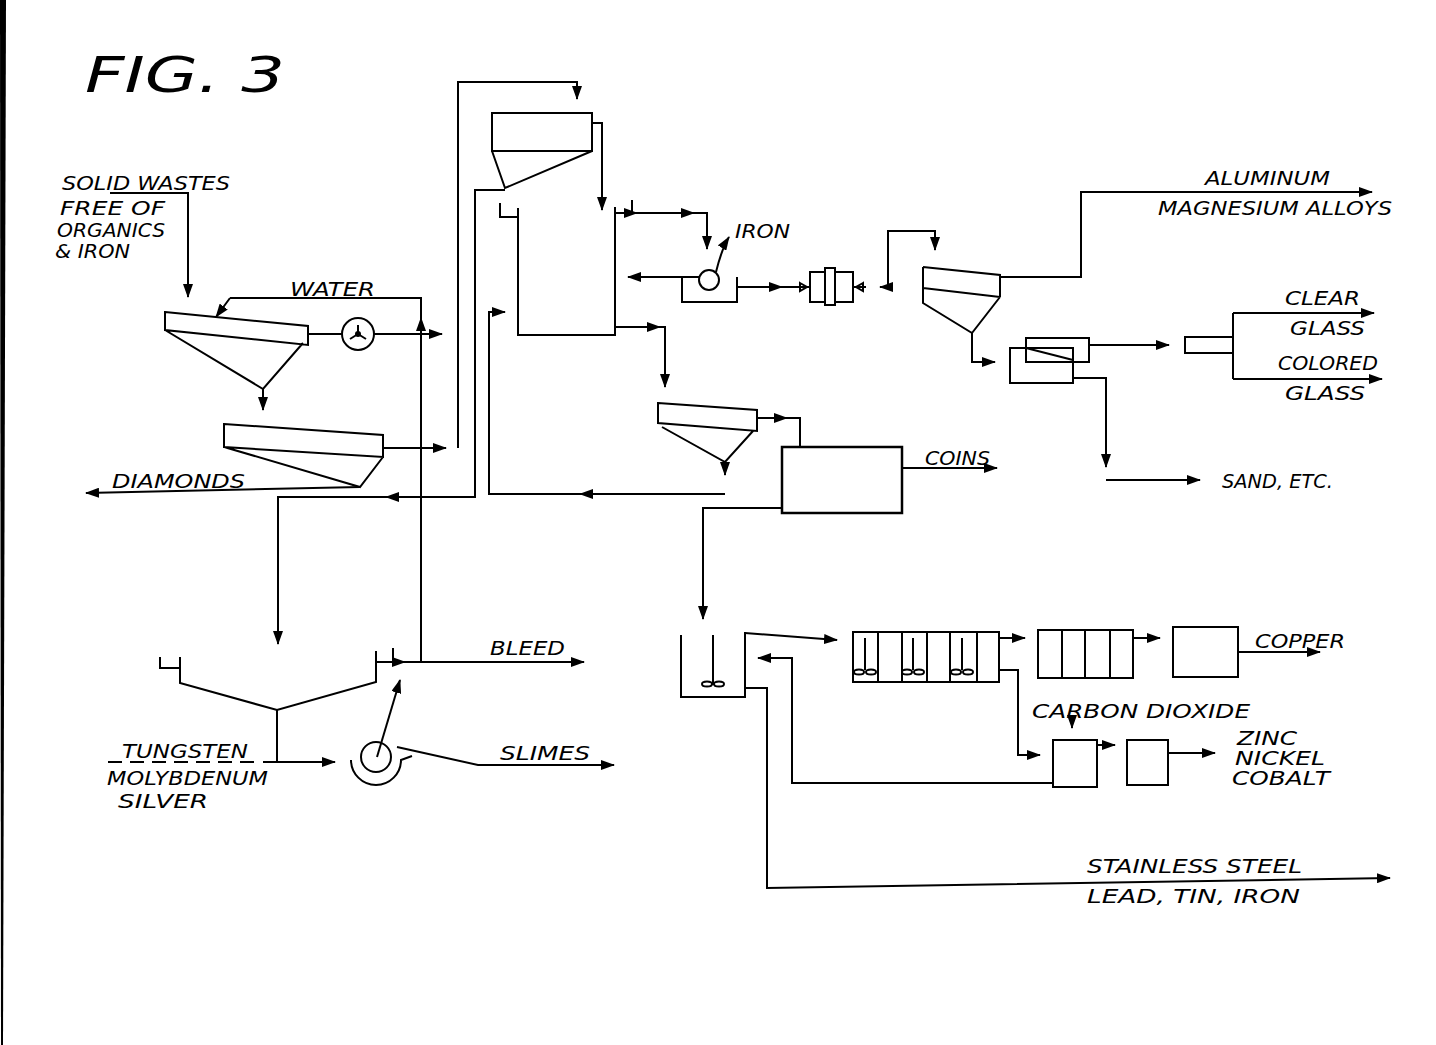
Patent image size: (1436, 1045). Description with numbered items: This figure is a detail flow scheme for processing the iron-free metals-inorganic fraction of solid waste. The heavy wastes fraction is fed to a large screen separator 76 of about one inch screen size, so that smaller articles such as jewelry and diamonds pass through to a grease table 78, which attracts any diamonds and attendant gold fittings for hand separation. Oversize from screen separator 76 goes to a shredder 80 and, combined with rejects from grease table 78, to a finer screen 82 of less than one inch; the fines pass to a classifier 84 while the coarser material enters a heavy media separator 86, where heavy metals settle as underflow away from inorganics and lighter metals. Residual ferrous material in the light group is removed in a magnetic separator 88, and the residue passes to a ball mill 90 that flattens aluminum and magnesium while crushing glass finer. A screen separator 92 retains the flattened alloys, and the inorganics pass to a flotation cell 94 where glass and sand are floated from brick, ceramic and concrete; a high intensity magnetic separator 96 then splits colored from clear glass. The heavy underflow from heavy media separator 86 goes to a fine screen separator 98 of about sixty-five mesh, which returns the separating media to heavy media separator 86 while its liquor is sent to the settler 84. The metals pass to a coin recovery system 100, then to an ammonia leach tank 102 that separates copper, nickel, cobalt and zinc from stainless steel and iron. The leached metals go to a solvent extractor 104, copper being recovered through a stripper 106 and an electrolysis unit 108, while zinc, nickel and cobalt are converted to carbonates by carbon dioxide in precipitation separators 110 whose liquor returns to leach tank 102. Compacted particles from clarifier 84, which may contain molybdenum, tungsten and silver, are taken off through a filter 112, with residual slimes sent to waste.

The screen separator 76 is at (287, 365).
The grease table 78 is at (360, 430).
The shredder 80 is at (371, 322).
The finer screen 82 is at (592, 113).
The classifier 84 is at (330, 695).
The heavy media separator 86 is at (615, 250).
The magnetic separator 88 is at (718, 275).
The ball mill 90 is at (826, 266).
The screen separator 92 is at (1000, 314).
The flotation cell 94 is at (1073, 365).
The high intensity magnetic separator 96 is at (1213, 335).
The fine screen separator 98 is at (743, 407).
The coin recovery system 100 is at (895, 513).
The ammonia leach tank 102 is at (681, 686).
The solvent extractor 104 is at (933, 630).
The stripper 106 is at (1090, 628).
The electrolysis unit 108 is at (1228, 625).
The precipitation separators 110 is at (1128, 808).
The filter 112 is at (386, 745).